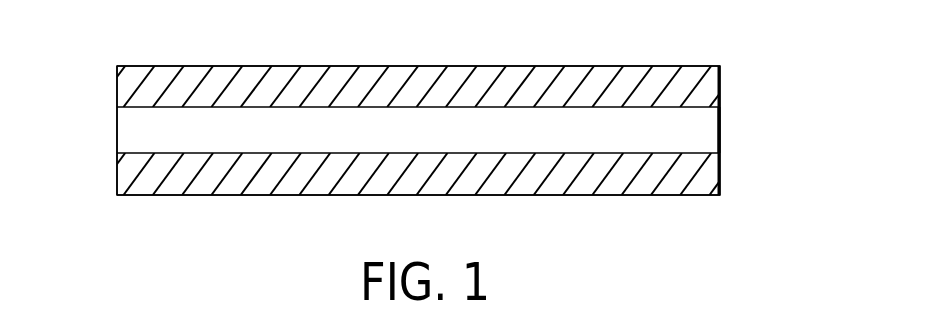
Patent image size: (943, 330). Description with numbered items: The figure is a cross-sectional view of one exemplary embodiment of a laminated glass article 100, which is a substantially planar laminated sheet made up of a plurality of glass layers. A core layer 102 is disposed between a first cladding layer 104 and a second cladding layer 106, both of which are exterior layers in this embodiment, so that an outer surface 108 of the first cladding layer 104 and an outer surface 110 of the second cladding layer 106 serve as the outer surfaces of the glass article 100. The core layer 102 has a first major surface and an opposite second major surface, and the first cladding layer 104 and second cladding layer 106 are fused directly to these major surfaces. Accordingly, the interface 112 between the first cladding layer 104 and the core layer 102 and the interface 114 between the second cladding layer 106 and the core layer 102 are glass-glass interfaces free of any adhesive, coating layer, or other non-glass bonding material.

The laminated glass article 100 is at (97, 55).
The core layer 102 is at (722, 132).
The first cladding layer 104 is at (722, 85).
The second cladding layer 106 is at (720, 178).
The outer surface of first cladding layer 108 is at (583, 67).
The outer surface of second cladding layer 110 is at (663, 190).
The interface between first cladding layer and core layer 112 is at (372, 108).
The interface between second cladding layer and core layer 114 is at (320, 153).